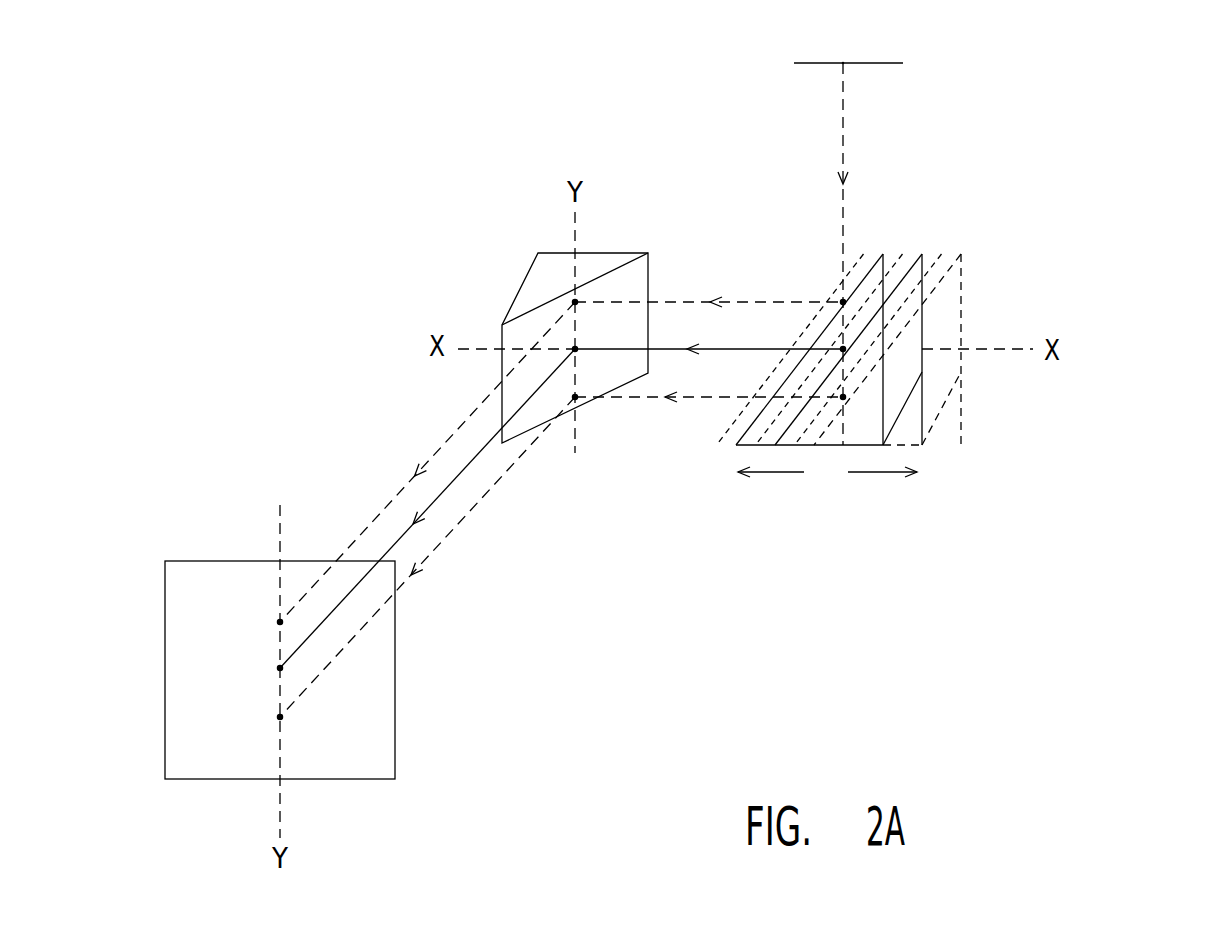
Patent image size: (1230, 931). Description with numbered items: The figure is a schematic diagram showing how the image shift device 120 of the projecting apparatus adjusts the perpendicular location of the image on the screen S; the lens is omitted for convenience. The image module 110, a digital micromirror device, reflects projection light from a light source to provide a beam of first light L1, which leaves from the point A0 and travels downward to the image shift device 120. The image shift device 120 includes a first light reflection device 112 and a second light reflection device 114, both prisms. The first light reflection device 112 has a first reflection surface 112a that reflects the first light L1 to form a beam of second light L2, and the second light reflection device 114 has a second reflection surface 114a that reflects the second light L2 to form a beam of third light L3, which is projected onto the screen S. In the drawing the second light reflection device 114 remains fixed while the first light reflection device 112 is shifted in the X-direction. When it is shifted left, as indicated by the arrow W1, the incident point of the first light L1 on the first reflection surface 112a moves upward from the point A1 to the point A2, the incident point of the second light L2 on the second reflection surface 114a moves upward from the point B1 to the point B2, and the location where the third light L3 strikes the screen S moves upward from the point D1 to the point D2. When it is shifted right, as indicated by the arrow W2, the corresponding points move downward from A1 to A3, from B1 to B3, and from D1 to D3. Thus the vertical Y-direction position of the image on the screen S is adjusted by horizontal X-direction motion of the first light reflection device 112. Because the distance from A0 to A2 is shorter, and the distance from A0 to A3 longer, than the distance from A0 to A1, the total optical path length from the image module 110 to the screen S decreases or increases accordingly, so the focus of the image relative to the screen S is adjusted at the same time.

The image module 110 is at (883, 63).
The first light reflection device 112 is at (877, 250).
The first reflection surface 112a is at (740, 496).
The second light reflection device 114 is at (506, 325).
The second reflection surface 114a is at (522, 338).
The image shift device 120 is at (911, 351).
The screen S is at (165, 664).
The first light L1 is at (827, 254).
The second light L2 is at (709, 349).
The third light L3 is at (427, 509).
The point A0 is at (843, 45).
The point A1 is at (890, 268).
The point A2 is at (843, 302).
The point A3 is at (843, 401).
The point B1 is at (575, 349).
The point B2 is at (575, 302).
The point B3 is at (575, 397).
The point D1 is at (254, 667).
The point D2 is at (254, 620).
The point D3 is at (254, 716).
The arrow W1 is at (771, 493).
The arrow W2 is at (882, 493).